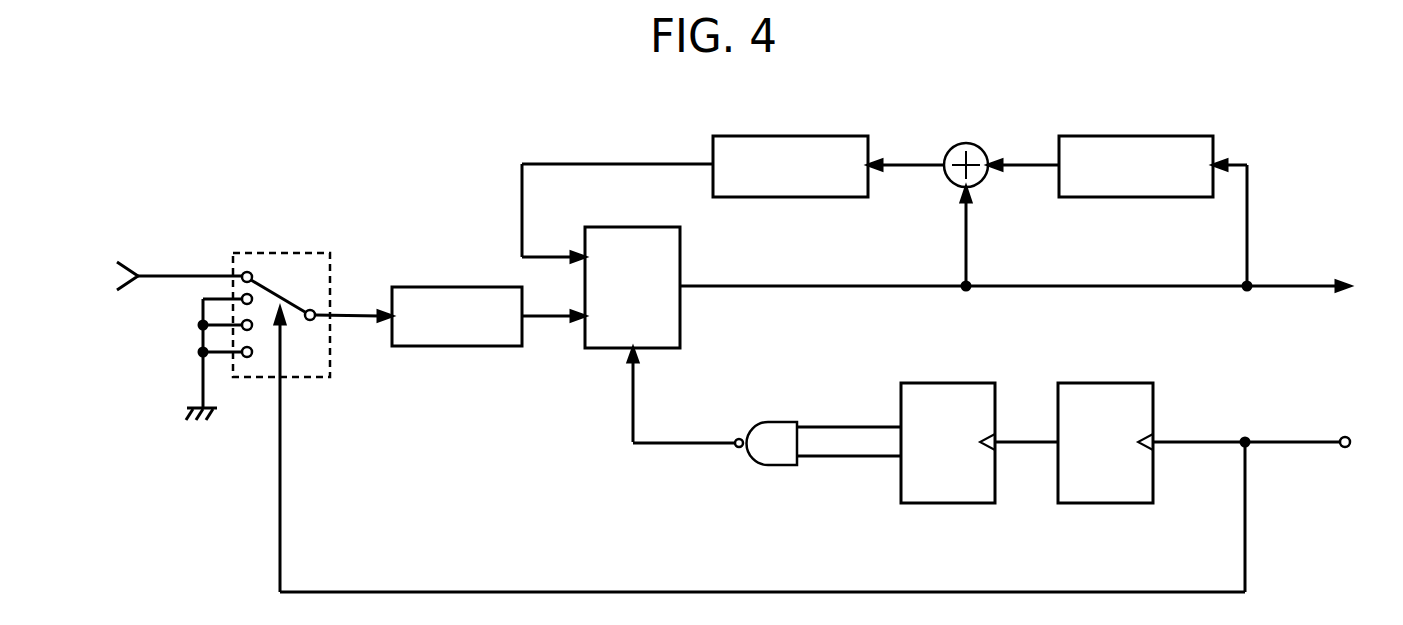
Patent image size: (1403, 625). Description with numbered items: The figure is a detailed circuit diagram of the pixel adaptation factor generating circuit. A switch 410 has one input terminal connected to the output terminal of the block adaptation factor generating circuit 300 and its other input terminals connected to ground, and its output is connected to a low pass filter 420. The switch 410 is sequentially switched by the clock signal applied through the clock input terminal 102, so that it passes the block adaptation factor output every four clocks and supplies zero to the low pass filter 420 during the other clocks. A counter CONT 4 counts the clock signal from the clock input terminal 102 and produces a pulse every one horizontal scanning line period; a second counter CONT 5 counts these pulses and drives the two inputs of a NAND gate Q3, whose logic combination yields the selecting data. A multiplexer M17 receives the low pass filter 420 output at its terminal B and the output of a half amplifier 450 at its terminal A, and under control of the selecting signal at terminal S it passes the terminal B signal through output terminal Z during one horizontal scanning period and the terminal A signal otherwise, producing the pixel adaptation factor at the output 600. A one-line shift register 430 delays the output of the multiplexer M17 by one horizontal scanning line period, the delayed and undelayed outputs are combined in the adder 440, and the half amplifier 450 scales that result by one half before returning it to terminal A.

The block adaptation factor generating circuit 300 is at (135, 276).
The switch 410 is at (288, 252).
The low pass filter 420 is at (450, 287).
The multiplexer M17 is at (627, 227).
The half amplifier 450 is at (800, 136).
The adder 440 is at (966, 143).
The one-line shift register 430 is at (1147, 136).
The pixel adaptation factor output 600 is at (1041, 286).
The NAND gate Q3 is at (776, 422).
The counter CONT 5 is at (952, 383).
The counter CONT 4 is at (1105, 383).
The clock input terminal 102 is at (1277, 511).